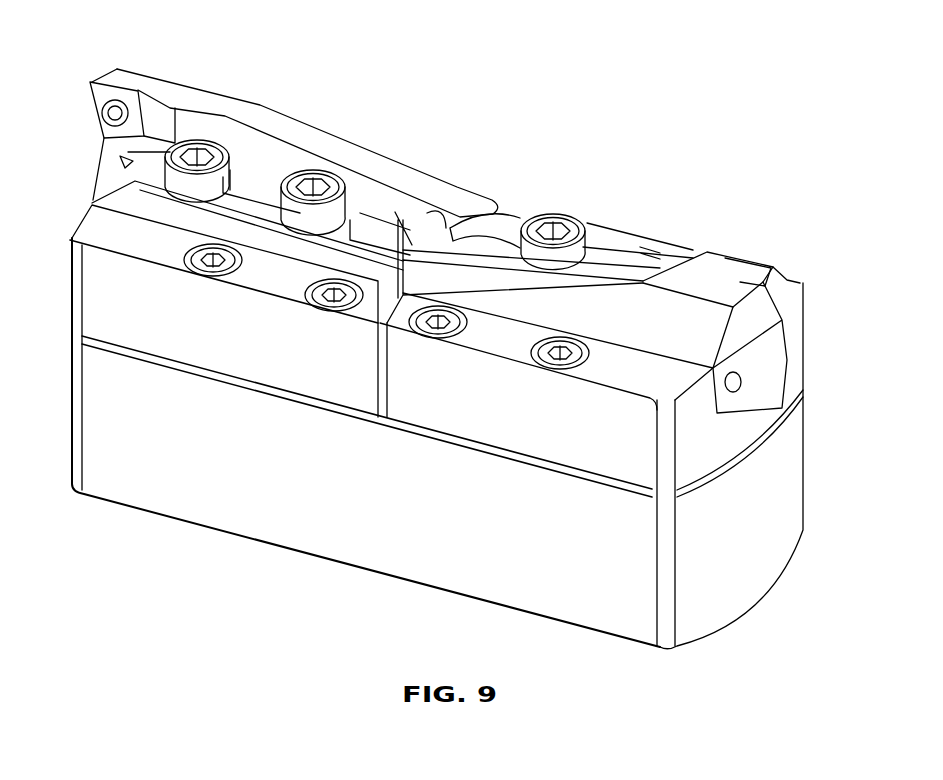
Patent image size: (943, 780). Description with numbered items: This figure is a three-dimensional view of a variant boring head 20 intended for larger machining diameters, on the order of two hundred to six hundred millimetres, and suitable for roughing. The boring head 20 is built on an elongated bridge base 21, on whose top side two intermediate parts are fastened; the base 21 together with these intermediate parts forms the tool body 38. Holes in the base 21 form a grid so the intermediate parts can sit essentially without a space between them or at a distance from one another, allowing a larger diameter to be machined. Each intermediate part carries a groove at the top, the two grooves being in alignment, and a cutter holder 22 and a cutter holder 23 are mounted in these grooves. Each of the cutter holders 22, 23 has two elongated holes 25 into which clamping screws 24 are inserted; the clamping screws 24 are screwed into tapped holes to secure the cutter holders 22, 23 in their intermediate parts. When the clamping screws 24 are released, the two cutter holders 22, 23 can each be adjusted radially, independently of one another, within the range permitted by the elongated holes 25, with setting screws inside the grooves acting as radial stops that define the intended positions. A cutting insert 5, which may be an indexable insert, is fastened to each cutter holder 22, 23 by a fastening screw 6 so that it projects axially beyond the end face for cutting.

The cutting insert 5 is at (92, 94).
The fastening screw 6 is at (108, 120).
The boring head 20 is at (600, 217).
The bridge base 21 is at (730, 583).
The cutter holder 22 is at (718, 252).
The cutter holder 23 is at (270, 110).
The clamping screw 24 is at (207, 143).
The elongated hole 25 is at (250, 207).
The tool body 38 is at (804, 450).